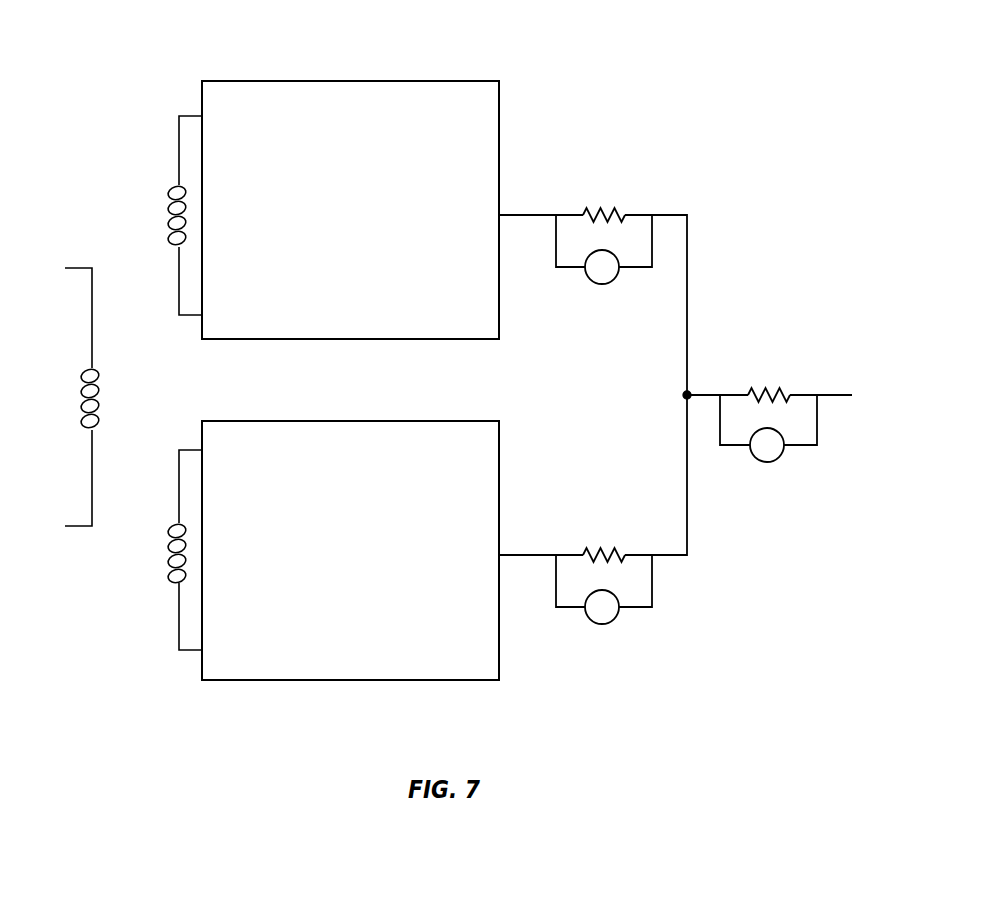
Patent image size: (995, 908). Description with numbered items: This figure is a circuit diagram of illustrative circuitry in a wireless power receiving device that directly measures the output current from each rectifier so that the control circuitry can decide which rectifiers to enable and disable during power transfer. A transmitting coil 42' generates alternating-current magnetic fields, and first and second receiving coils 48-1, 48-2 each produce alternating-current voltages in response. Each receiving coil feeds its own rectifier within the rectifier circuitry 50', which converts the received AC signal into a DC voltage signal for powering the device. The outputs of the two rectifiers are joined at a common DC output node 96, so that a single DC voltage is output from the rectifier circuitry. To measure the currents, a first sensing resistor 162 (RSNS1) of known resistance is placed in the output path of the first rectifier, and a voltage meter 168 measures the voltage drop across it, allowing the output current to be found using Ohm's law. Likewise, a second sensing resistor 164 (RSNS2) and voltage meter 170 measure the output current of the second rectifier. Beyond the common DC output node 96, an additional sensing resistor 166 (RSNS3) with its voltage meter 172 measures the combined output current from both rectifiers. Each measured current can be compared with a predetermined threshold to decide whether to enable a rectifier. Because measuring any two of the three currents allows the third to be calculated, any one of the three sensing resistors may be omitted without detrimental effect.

The rectifier circuitry 50' is at (350, 355).
The first receiving coil 48-1 is at (157, 215).
The second receiving coil 48-2 is at (157, 550).
The transmitting coil 42' is at (63, 397).
The first sensing resistor 162 is at (641, 199).
The second sensing resistor 164 is at (581, 547).
The additional sensing resistor 166 is at (813, 367).
The voltage meter 168 is at (597, 294).
The voltage meter 170 is at (597, 634).
The voltage meter 172 is at (773, 479).
The common DC output node 96 is at (682, 393).